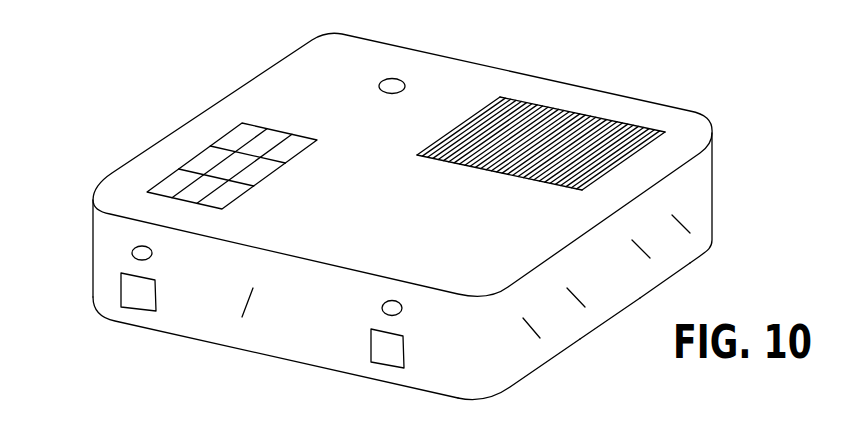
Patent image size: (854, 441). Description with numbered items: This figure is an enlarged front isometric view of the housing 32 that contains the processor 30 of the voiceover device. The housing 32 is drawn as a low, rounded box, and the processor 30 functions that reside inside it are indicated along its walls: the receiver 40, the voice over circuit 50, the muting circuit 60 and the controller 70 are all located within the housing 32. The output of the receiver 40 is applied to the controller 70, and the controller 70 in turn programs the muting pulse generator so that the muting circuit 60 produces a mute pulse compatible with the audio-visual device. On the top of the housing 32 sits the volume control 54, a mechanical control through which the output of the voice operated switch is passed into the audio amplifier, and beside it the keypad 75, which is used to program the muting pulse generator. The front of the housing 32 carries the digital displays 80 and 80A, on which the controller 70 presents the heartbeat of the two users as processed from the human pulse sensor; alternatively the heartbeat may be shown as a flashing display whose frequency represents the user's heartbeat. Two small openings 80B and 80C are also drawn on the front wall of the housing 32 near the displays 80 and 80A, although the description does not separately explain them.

The processor 30 is at (233, 333).
The housing 32 is at (113, 180).
The receiver 40 is at (553, 353).
The voice over circuit 50 is at (597, 320).
The volume control 54 is at (403, 82).
The muting circuit 60 is at (662, 272).
The controller 70 is at (702, 242).
The keypad 75 is at (203, 150).
The digital display 80 is at (132, 306).
The digital display 80A is at (388, 361).
The port opening 80B is at (132, 253).
The port opening 80C is at (400, 310).